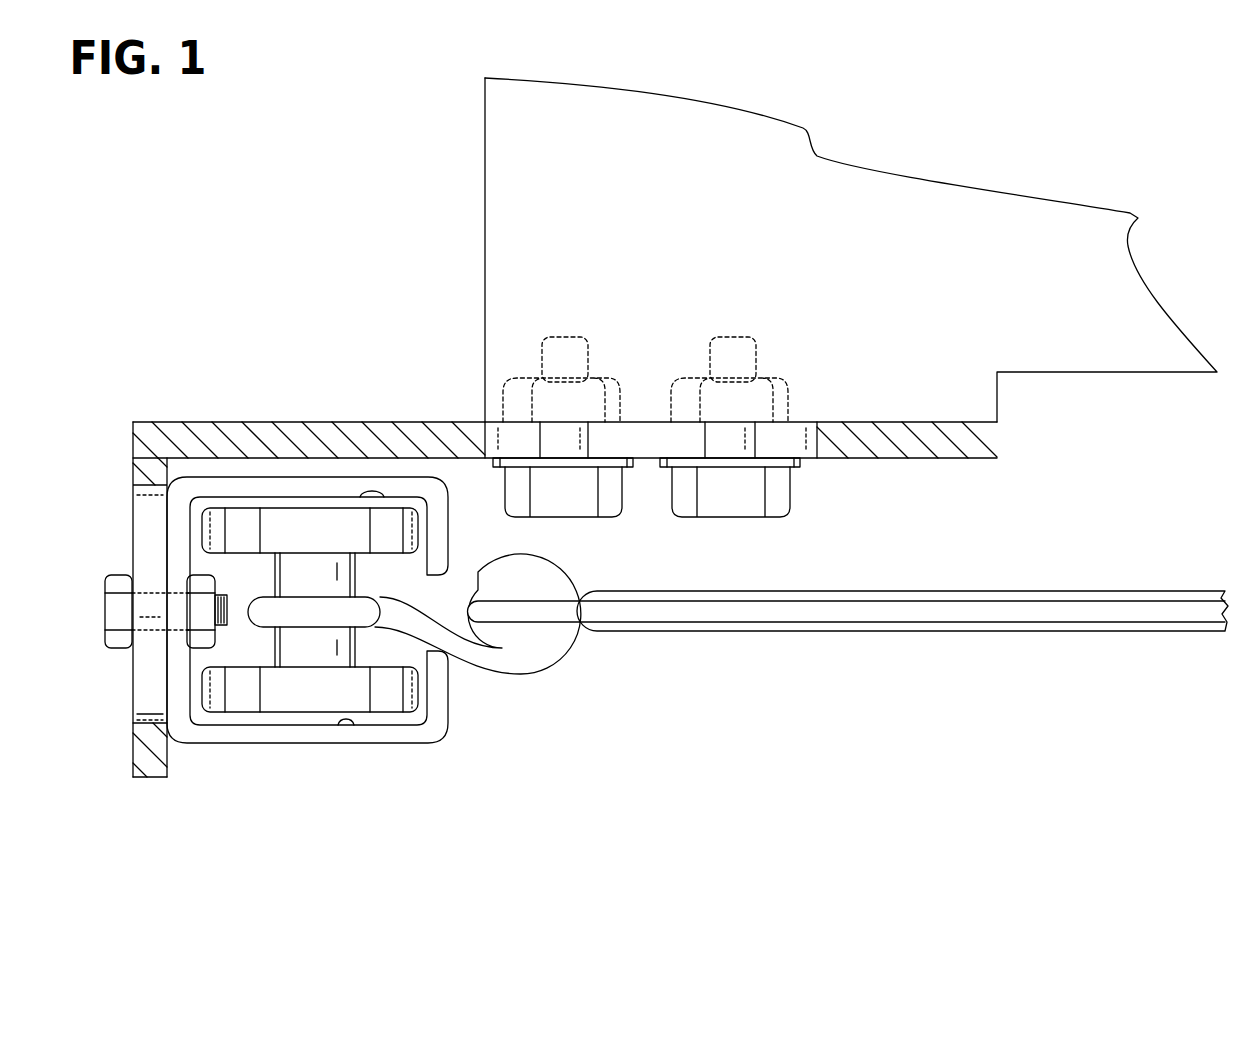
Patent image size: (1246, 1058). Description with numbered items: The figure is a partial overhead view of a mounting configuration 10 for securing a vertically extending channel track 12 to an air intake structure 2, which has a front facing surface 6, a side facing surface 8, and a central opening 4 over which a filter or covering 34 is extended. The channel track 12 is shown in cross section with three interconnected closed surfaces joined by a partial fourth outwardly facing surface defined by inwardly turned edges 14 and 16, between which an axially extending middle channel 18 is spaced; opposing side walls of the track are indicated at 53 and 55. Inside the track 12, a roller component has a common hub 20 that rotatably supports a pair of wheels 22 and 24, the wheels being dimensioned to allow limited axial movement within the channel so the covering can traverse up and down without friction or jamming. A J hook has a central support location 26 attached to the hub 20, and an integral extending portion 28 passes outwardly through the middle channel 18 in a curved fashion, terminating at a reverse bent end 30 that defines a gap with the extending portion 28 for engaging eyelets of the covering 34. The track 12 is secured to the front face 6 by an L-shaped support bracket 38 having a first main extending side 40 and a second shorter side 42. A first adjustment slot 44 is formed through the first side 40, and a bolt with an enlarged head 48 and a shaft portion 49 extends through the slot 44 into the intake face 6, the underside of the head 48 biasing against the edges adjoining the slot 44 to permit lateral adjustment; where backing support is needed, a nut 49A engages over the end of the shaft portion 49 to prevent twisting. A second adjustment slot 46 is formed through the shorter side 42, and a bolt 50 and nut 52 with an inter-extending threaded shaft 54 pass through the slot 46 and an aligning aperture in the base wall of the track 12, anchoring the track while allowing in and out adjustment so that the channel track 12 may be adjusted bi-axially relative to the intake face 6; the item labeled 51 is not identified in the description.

The air intake structure 2 is at (660, 197).
The central opening 4 is at (1140, 402).
The front facing surface 6 is at (820, 440).
The side facing surface 8 is at (485, 188).
The mounting configuration 10 is at (345, 208).
The channel track 12 is at (308, 748).
The inwardly turned edge 14 is at (448, 532).
The inwardly turned edge 16 is at (448, 683).
The middle channel 18 is at (430, 600).
The hub 20 is at (293, 645).
The wheel 22 is at (310, 530).
The wheel 24 is at (350, 690).
The central support location 26 is at (305, 605).
The extending portion 28 is at (528, 662).
The reverse bent end 30 is at (480, 585).
The covering 34 is at (1073, 632).
The L-shaped support bracket 38 is at (150, 430).
The first main extending side 40 is at (893, 460).
The second shorter side 42 is at (137, 750).
The first adjustment slot 44 is at (812, 458).
The second adjustment slot 46 is at (140, 512).
The enlarged head 48 is at (687, 503).
The shaft portion 49 is at (713, 440).
The nut 49A is at (689, 383).
The bolt 50 is at (105, 630).
The bracket wall 51 is at (190, 545).
The nut 52 is at (202, 642).
The side wall of track 53 is at (346, 725).
The threaded shaft 54 is at (145, 607).
The side wall of track 55 is at (372, 497).